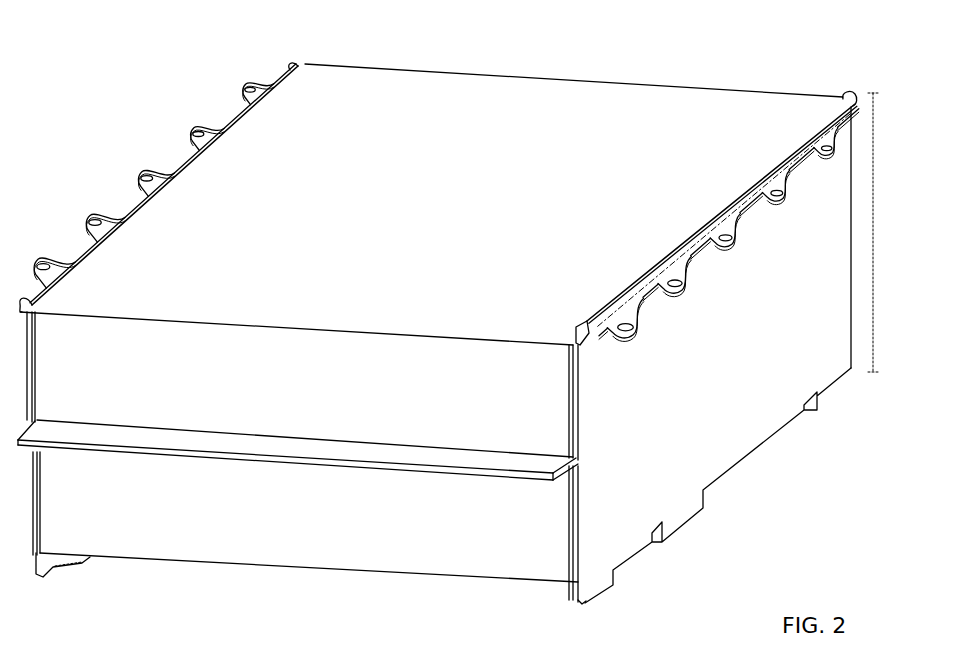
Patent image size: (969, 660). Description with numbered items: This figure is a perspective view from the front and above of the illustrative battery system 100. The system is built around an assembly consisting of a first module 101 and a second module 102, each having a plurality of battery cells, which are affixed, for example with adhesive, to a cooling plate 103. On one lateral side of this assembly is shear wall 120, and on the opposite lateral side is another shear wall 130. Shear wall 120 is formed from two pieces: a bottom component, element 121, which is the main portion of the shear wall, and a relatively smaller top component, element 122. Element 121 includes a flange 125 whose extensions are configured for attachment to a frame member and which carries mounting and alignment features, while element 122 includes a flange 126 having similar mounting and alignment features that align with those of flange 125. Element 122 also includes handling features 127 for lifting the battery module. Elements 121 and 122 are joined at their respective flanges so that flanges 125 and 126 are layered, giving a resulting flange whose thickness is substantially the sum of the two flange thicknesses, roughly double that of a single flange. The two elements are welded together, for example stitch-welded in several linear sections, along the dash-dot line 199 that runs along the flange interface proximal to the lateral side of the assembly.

The battery system 100 is at (185, 78).
The first module 101 is at (320, 398).
The second module 102 is at (330, 526).
The cooling plate 103 is at (450, 475).
The shear wall 120 is at (815, 338).
The element (bottom component of shear wall) 121 is at (877, 236).
The element (top component of shear wall) 122 is at (893, 99).
The flange 125 is at (706, 290).
The flange 126 is at (709, 236).
The handling features 127 is at (856, 97).
The shear wall 130 is at (184, 166).
The dash-dot line 199 is at (777, 148).